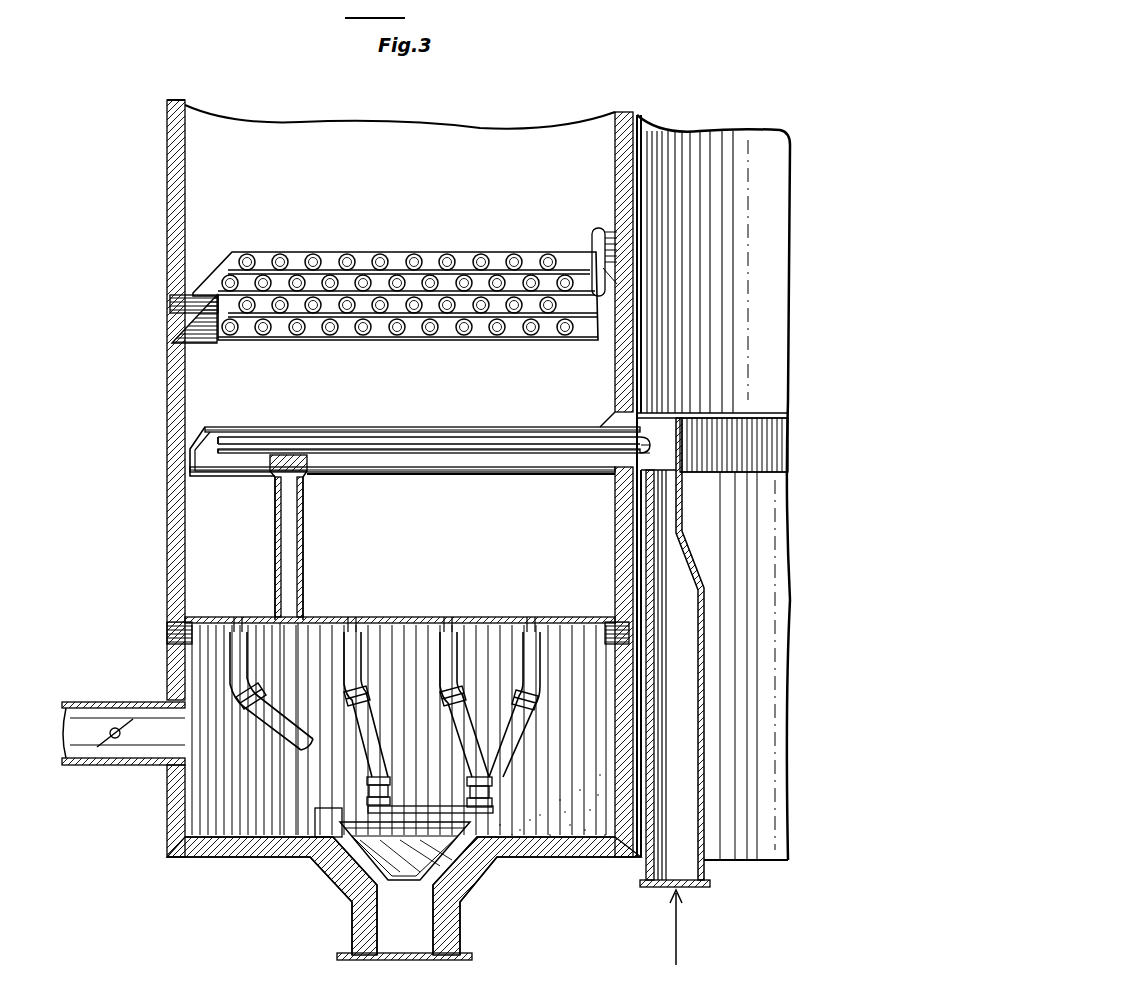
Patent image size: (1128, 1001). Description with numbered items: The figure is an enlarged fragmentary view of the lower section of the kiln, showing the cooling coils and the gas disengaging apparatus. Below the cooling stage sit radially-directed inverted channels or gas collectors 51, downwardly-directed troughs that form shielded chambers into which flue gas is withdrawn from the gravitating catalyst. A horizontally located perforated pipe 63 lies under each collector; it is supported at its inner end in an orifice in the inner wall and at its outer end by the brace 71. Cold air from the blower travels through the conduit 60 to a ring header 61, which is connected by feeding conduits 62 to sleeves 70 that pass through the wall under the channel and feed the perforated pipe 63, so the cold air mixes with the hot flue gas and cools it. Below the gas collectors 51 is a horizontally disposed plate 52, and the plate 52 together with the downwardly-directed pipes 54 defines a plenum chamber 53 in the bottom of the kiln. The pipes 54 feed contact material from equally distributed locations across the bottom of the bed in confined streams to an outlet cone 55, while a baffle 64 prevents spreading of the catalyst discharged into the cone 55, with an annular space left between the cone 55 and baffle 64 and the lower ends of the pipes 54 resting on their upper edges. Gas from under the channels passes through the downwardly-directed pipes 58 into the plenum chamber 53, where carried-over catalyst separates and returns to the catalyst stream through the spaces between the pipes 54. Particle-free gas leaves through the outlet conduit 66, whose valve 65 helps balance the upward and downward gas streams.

The gas collectors 51 is at (200, 438).
The plate 52 is at (478, 617).
The plenum chamber 53 is at (195, 832).
The downwardly-directed pipes 54 is at (365, 760).
The outlet cone 55 is at (496, 820).
The downwardly-directed pipes 58 is at (305, 539).
The conduit 60 is at (700, 826).
The ring header 61 is at (658, 412).
The feeding conduits 62 is at (640, 410).
The perforated pipe 63 is at (418, 440).
The baffle 64 is at (452, 846).
The valve 65 is at (116, 745).
The outlet conduit 66 is at (97, 702).
The sleeves 70 is at (645, 456).
The brace 71 is at (247, 452).